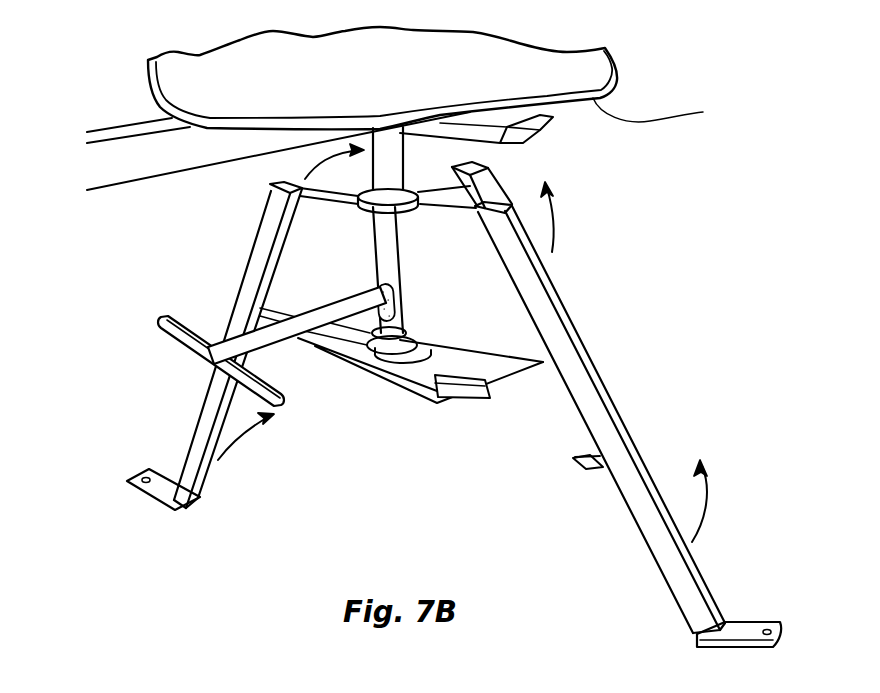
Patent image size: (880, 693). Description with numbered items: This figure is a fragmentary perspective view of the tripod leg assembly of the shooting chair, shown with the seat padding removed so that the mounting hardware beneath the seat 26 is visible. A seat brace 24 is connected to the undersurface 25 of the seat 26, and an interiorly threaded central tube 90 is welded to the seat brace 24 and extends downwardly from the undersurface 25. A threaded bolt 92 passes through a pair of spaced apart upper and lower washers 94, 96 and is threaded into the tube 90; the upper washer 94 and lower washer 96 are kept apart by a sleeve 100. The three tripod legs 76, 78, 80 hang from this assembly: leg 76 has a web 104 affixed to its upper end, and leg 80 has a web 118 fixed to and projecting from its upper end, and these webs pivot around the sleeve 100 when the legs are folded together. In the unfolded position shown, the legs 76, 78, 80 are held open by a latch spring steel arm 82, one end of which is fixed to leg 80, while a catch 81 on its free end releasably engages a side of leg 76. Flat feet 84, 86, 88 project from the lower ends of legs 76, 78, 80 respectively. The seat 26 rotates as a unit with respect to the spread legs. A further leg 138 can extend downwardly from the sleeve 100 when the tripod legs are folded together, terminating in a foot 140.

The seat brace 24 is at (136, 172).
The undersurface 25 is at (664, 112).
The seat 26 is at (284, 86).
The leg 76 is at (560, 328).
The leg 78 is at (490, 181).
The leg 80 is at (245, 283).
The catch 81 is at (475, 393).
The latch spring steel arm 82 is at (410, 393).
The flat foot 84 is at (742, 627).
The flat foot 86 is at (580, 464).
The flat foot 88 is at (143, 474).
The central tube 90 is at (395, 145).
The threaded bolt 92 is at (413, 375).
The upper washer 94 is at (424, 187).
The lower washer 96 is at (433, 348).
The sleeve 100 is at (383, 235).
The web 104 is at (487, 282).
The web 118 is at (333, 282).
The leg 138 is at (278, 348).
The foot 140 is at (165, 323).